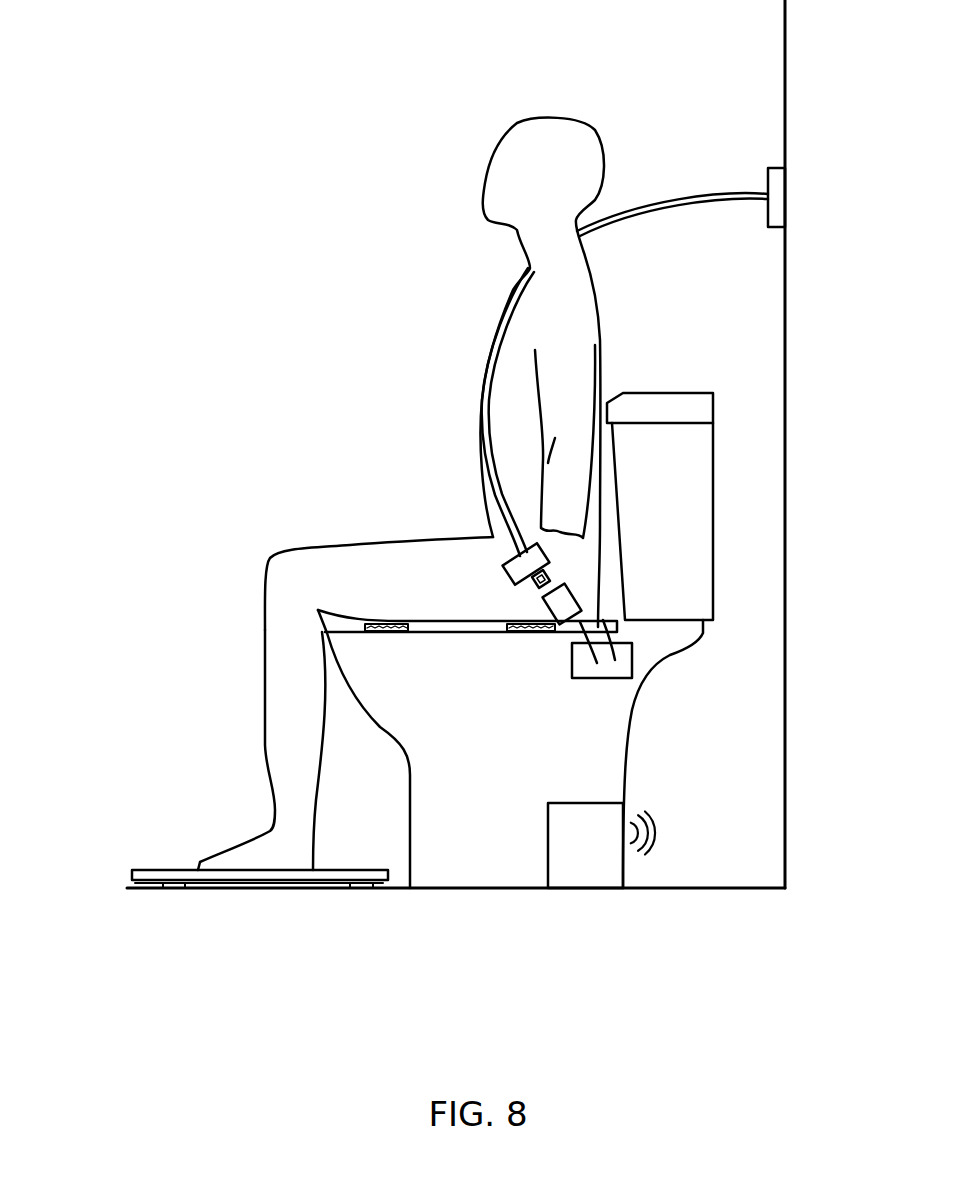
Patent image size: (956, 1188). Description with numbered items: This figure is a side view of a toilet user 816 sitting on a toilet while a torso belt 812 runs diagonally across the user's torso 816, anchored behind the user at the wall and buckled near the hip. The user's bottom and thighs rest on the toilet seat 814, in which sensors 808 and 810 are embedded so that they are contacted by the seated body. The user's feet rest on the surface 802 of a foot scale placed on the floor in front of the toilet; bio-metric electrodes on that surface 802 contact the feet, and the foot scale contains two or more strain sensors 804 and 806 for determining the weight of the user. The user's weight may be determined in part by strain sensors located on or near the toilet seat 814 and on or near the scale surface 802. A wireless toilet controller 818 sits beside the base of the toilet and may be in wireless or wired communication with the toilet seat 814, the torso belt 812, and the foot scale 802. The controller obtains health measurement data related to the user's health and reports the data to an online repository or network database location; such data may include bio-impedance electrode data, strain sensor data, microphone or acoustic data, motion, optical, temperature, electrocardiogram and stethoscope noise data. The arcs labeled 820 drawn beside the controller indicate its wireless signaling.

The foot scale surface 802 is at (150, 870).
The strain sensor 804 is at (173, 889).
The strain sensor 806 is at (355, 889).
The sensor 808 is at (387, 633).
The sensor 810 is at (535, 633).
The torso belt 812 is at (490, 502).
The toilet seat 814 is at (337, 626).
The toilet user 816 is at (525, 322).
The wireless toilet controller 818 is at (601, 818).
The audible alert 820 is at (657, 836).